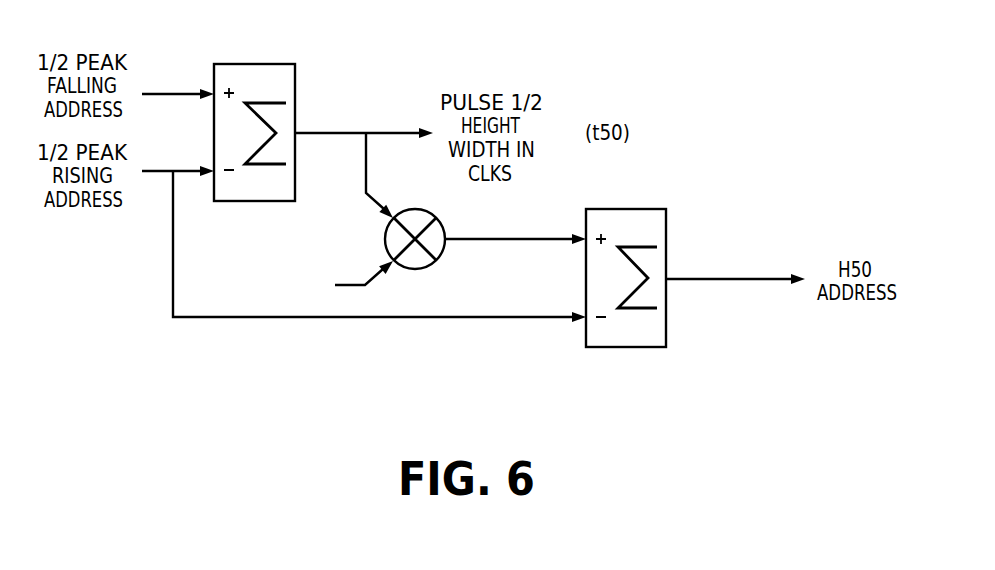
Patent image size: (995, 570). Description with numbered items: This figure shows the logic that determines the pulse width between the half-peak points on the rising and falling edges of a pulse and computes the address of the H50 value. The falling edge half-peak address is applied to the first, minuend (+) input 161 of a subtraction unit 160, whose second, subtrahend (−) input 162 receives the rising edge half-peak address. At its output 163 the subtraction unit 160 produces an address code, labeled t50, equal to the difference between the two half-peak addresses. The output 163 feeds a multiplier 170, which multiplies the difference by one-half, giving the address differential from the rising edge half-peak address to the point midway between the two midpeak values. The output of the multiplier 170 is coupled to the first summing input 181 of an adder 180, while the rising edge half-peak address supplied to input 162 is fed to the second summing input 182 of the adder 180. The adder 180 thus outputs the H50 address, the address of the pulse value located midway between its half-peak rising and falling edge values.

The subtraction unit 160 is at (254, 64).
The first, minuend (+) input 161 is at (213, 89).
The second, subtrahend (−) input 162 is at (213, 168).
The output 163 is at (301, 131).
The multiplier 170 is at (405, 211).
The adder 180 is at (622, 209).
The first summing input 181 is at (585, 236).
The second summing input 182 is at (585, 320).